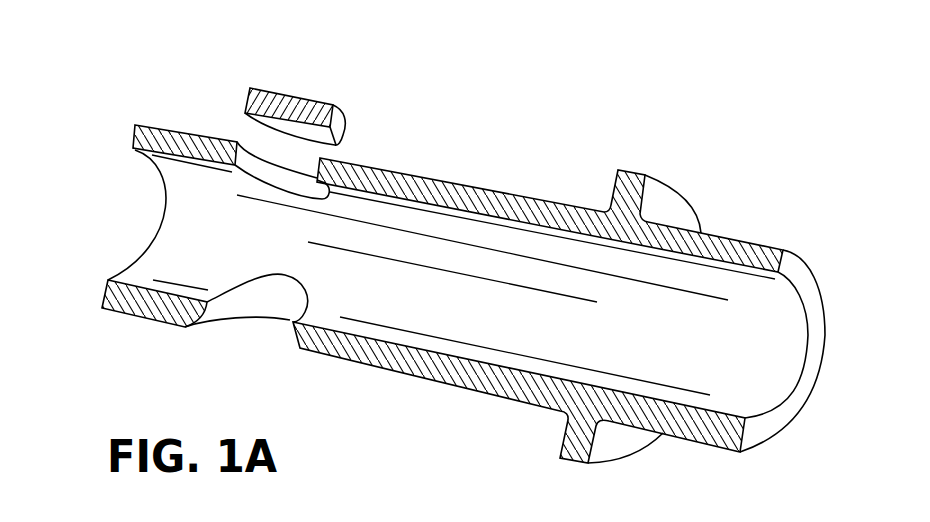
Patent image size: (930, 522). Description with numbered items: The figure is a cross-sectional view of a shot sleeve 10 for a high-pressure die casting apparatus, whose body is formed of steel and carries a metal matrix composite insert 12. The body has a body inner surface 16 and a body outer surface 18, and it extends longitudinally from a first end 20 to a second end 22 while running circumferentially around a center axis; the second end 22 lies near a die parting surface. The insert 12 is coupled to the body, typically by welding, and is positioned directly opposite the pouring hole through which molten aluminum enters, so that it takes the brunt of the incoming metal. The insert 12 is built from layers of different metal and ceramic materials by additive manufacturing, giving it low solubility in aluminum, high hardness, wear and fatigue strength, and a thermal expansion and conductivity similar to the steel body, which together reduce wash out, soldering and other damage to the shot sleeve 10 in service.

The shot sleeve 10 is at (620, 98).
The metal matrix composite insert 12 is at (247, 100).
The body inner surface 16 is at (472, 218).
The body outer surface 18 is at (440, 180).
The first end 20 is at (135, 137).
The second end 22 is at (808, 288).